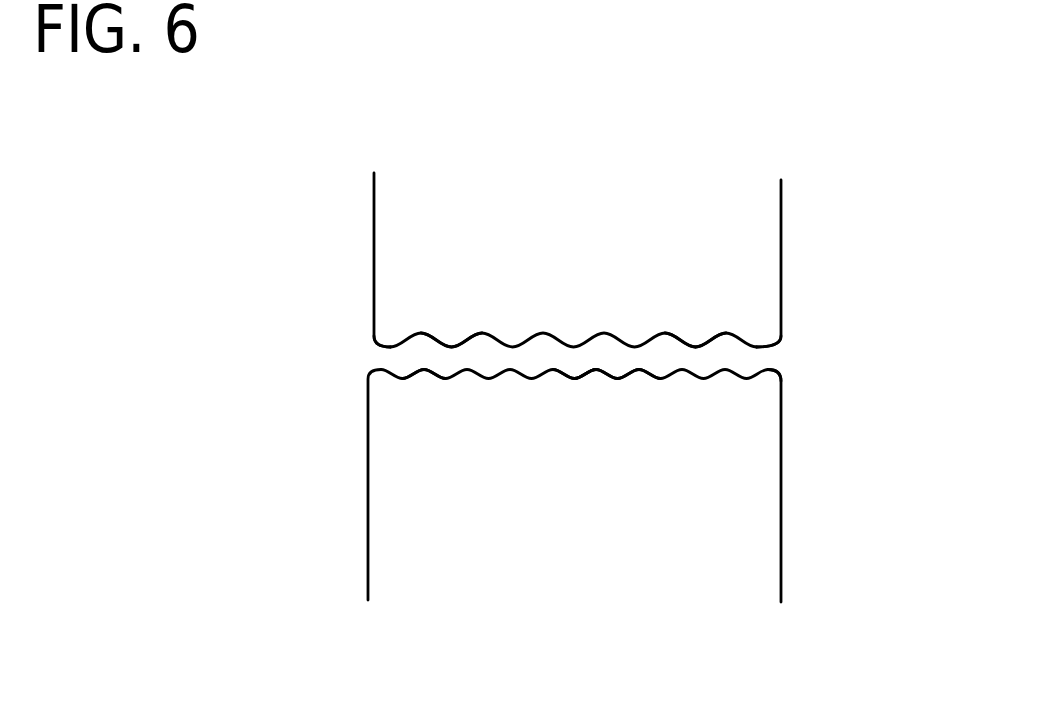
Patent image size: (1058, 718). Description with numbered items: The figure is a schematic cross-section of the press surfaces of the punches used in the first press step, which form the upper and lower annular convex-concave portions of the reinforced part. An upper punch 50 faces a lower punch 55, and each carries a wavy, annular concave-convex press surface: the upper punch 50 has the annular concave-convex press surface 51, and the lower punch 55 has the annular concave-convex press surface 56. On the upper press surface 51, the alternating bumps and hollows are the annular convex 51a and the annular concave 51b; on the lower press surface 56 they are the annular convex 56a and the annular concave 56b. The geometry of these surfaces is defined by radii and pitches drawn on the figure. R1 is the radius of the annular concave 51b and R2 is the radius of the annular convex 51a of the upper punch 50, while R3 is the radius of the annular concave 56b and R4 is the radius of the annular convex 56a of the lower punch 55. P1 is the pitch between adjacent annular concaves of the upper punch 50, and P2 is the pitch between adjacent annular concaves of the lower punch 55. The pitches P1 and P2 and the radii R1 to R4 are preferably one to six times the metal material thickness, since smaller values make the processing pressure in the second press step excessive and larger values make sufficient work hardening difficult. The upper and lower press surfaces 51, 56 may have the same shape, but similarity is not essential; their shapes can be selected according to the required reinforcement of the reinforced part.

The upper punch 50 is at (600, 258).
The annular concave-convex press surface 51 is at (350, 330).
The annular convex 51a is at (705, 338).
The annular concave 51b is at (675, 340).
The lower punch 55 is at (601, 486).
The annular concave-convex press surface 56 is at (353, 377).
The annular convex 56a is at (593, 372).
The annular concave 56b is at (573, 377).
The radius of the annular concave R1 is at (740, 324).
The radius of the annular convex R2 is at (383, 345).
The radius of the annular concave R3 is at (748, 391).
The radius of the annular convex R4 is at (430, 383).
The pitch of the adjacent annular concaves P1 is at (482, 310).
The pitch of the adjacent annular concaves P2 is at (652, 415).